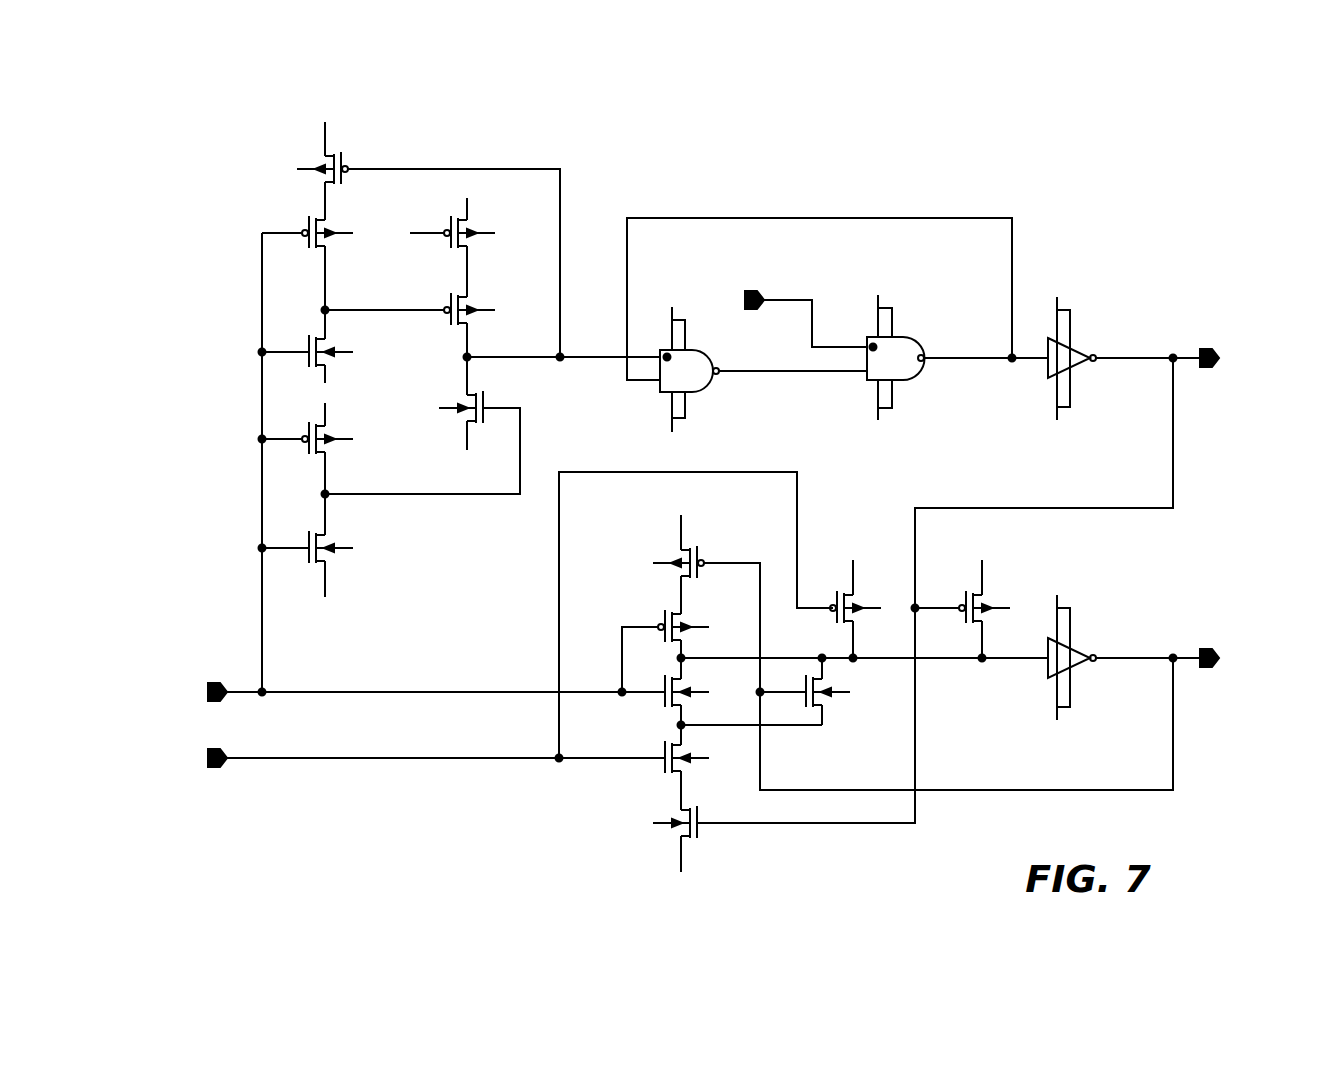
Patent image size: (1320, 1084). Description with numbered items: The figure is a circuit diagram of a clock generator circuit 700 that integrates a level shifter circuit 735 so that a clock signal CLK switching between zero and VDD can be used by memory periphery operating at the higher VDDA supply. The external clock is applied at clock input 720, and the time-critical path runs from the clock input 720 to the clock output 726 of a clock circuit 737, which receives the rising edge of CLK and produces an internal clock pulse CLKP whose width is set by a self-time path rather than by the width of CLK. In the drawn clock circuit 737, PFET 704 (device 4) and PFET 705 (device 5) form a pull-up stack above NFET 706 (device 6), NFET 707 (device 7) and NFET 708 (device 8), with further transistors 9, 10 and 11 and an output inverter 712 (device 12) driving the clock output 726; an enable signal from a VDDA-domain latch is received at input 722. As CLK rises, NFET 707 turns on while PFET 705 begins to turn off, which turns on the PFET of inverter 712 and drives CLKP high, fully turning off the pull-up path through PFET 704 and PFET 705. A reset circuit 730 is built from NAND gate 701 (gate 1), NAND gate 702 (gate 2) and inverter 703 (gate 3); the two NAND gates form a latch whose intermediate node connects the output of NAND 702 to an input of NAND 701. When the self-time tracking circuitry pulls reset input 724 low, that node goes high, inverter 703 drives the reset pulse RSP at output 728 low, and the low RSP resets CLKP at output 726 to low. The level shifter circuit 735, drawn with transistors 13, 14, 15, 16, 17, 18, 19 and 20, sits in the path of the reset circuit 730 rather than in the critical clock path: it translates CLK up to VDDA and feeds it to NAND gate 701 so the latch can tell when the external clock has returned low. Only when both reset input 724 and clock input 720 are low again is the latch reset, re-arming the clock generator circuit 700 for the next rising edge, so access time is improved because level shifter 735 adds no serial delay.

The NAND gate 1 is at (680, 373).
The NAND gate 2 is at (885, 361).
The inverter 3 is at (1064, 362).
The PMOS transistor 4 is at (913, 663).
The PMOS transistor 5 is at (665, 647).
The NMOS transistor 6 is at (687, 697).
The NMOS transistor 7 is at (687, 768).
The NMOS transistor 8 is at (675, 817).
The PMOS transistor 9 is at (853, 596).
The NMOS transistor 10 is at (810, 693).
The PMOS transistor 11 is at (965, 596).
The inverter 12 is at (1113, 662).
The PMOS transistor 13 is at (318, 163).
The PMOS transistor 14 is at (314, 229).
The NMOS transistor 15 is at (314, 347).
The PMOS transistor 16 is at (307, 426).
The NMOS transistor 17 is at (307, 533).
The PMOS transistor 18 is at (458, 229).
The PMOS transistor 19 is at (475, 305).
The NMOS transistor 20 is at (476, 403).
The clock generator circuit 700 is at (1142, 164).
The NAND gate 701 is at (717, 354).
The NAND gate 702 is at (925, 341).
The inverter 703 is at (1114, 322).
The PFET 704 is at (646, 543).
The PFET 705 is at (647, 606).
The NFET 706 is at (717, 705).
The NFET 707 is at (715, 784).
The NFET 708 is at (640, 813).
The inverter 712 is at (1077, 677).
The clock input 720 is at (210, 668).
The enable input 722 is at (210, 774).
The reset input 724 is at (792, 272).
The clock output 726 is at (1222, 667).
The output 728 is at (1220, 375).
The reset circuit 730 is at (967, 195).
The level shifter circuit 735 is at (460, 127).
The clock circuit 737 is at (929, 802).